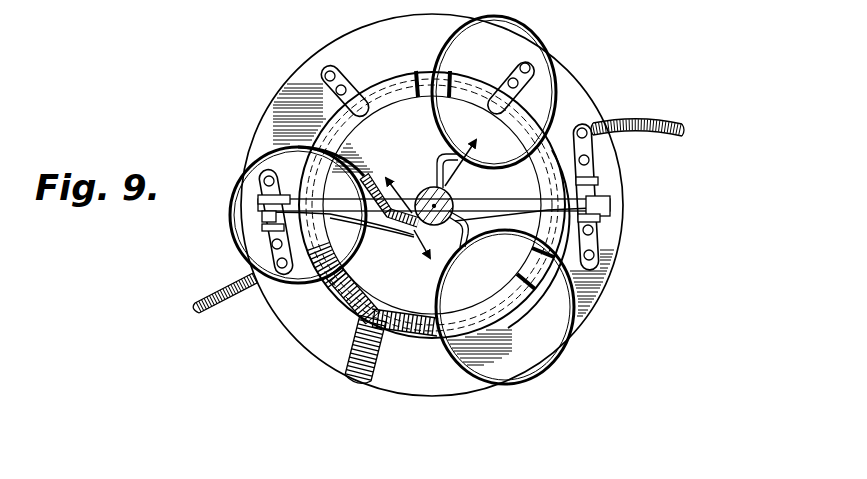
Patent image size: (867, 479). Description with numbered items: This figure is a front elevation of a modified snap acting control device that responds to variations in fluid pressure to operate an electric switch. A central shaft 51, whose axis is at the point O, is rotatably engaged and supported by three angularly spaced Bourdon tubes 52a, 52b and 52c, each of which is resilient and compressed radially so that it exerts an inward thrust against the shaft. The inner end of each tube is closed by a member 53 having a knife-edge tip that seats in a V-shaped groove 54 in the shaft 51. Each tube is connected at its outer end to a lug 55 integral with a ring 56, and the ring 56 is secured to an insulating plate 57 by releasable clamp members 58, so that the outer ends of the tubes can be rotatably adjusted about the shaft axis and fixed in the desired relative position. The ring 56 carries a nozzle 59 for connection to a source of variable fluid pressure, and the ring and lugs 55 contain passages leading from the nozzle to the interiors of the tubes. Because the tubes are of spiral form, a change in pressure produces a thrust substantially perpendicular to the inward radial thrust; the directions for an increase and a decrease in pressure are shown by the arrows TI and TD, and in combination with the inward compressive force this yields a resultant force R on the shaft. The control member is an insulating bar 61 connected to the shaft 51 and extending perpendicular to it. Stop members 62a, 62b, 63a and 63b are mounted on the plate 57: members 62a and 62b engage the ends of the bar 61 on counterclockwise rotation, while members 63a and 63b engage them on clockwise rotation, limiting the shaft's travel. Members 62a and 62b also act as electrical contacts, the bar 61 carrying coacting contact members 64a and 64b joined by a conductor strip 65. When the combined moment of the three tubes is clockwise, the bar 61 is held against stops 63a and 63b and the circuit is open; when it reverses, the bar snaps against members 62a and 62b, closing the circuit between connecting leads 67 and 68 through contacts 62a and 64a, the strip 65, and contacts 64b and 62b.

The central shaft 51 is at (428, 184).
The center point O is at (450, 200).
The Bourdon tube 52a is at (556, 88).
The Bourdon tube 52b is at (488, 384).
The Bourdon tube 52c is at (291, 146).
The closing member 53 is at (405, 230).
The V-shaped groove 54 is at (466, 240).
The lug 55 is at (420, 74).
The ring 56 is at (512, 305).
The insulating plate 57 is at (620, 264).
The releasable clamp member 58 is at (360, 88).
The nozzle 59 is at (360, 380).
The insulating bar 61 is at (526, 200).
The stop member 62a is at (600, 180).
The stop member 62b is at (262, 231).
The stop member 63a is at (610, 218).
The stop member 63b is at (262, 195).
The contact member 64a is at (612, 198).
The contact member 64b is at (260, 214).
The conductor strip 65 is at (378, 230).
The connecting lead 67 is at (688, 126).
The connecting lead 68 is at (193, 311).
The resultant force R is at (462, 158).
The thrust direction on pressure increase TI is at (400, 178).
The thrust direction on pressure decrease TD is at (418, 246).